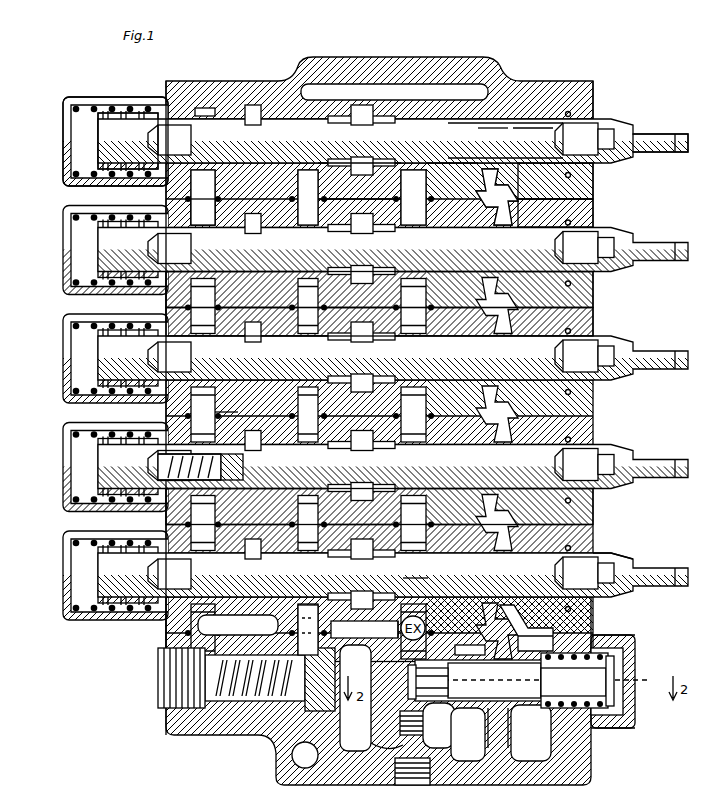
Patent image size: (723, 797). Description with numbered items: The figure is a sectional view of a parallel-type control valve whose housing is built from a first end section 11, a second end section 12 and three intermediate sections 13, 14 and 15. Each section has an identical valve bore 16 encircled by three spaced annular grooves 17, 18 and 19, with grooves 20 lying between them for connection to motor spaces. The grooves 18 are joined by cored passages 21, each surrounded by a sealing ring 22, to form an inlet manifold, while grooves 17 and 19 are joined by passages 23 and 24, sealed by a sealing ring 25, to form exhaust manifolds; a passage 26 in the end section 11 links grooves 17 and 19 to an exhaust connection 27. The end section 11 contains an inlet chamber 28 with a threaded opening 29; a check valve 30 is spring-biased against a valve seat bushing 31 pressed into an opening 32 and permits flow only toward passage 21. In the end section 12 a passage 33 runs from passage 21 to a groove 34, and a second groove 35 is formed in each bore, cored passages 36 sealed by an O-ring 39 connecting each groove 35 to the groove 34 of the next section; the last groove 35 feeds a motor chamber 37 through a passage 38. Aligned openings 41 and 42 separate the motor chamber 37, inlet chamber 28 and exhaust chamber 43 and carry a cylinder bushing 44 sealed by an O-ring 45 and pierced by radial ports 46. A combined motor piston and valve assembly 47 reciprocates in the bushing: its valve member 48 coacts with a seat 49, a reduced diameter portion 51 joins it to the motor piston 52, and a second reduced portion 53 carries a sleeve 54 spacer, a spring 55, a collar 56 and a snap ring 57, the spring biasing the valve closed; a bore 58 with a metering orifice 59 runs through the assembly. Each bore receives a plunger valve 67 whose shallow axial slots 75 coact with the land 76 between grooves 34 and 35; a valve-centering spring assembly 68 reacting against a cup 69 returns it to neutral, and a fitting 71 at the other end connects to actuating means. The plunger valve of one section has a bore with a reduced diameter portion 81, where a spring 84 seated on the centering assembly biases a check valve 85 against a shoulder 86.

The first end section 11 is at (210, 735).
The second end section 12 is at (290, 52).
The intermediate section 13 is at (587, 288).
The intermediate section 14 is at (587, 311).
The intermediate section 15 is at (587, 504).
The valve bore 16 is at (545, 85).
The annular groove 17 is at (196, 100).
The annular groove 18 is at (348, 369).
The annular groove 19 is at (435, 368).
The groove 20 is at (245, 97).
The cored passage 21 is at (308, 345).
The sealing ring 22 is at (333, 368).
The passage 23 is at (202, 345).
The passage 24 is at (413, 345).
The sealing ring 25 is at (321, 371).
The passage 26 is at (238, 626).
The exhaust connection 27 is at (415, 587).
The inlet chamber 28 is at (355, 698).
The threaded opening 29 is at (412, 778).
The check valve 30 is at (250, 698).
The valve seat bushing 31 is at (361, 402).
The opening 32 is at (364, 633).
The passage 33 is at (386, 75).
The groove 34 is at (470, 132).
The groove 35 is at (505, 84).
The cored passage 36 is at (500, 182).
The motor chamber 37 is at (531, 733).
The passage 38 is at (526, 628).
The O-ring 39 is at (486, 352).
The opening 41 is at (520, 635).
The opening 42 is at (412, 733).
The exhaust chamber 43 is at (386, 633).
The cylinder bushing 44 is at (496, 728).
The O-ring 45 is at (439, 728).
The radial port 46 is at (468, 734).
The combined motor piston and valve assembly 47 is at (607, 664).
The valve member 48 is at (387, 744).
The seat 49 is at (432, 683).
The reduced diameter portion 51 is at (470, 640).
The motor piston 52 is at (528, 680).
The second reduced diameter portion 53 is at (573, 683).
The sleeve 54 is at (574, 680).
The spring 55 is at (613, 626).
The collar 56 is at (625, 646).
The snap ring 57 is at (627, 704).
The bore 58 is at (520, 728).
The metering orifice 59 is at (433, 678).
The plunger valve 67 is at (605, 543).
The valve-centering spring assembly 68 is at (57, 100).
The cup 69 is at (57, 165).
The fitting 71 is at (640, 126).
The axial slot 75 is at (532, 354).
The land 76 is at (492, 354).
The reduced diameter portion 81 is at (361, 402).
The spring 84 is at (226, 424).
The check valve 85 is at (232, 450).
The shoulder 86 is at (232, 466).